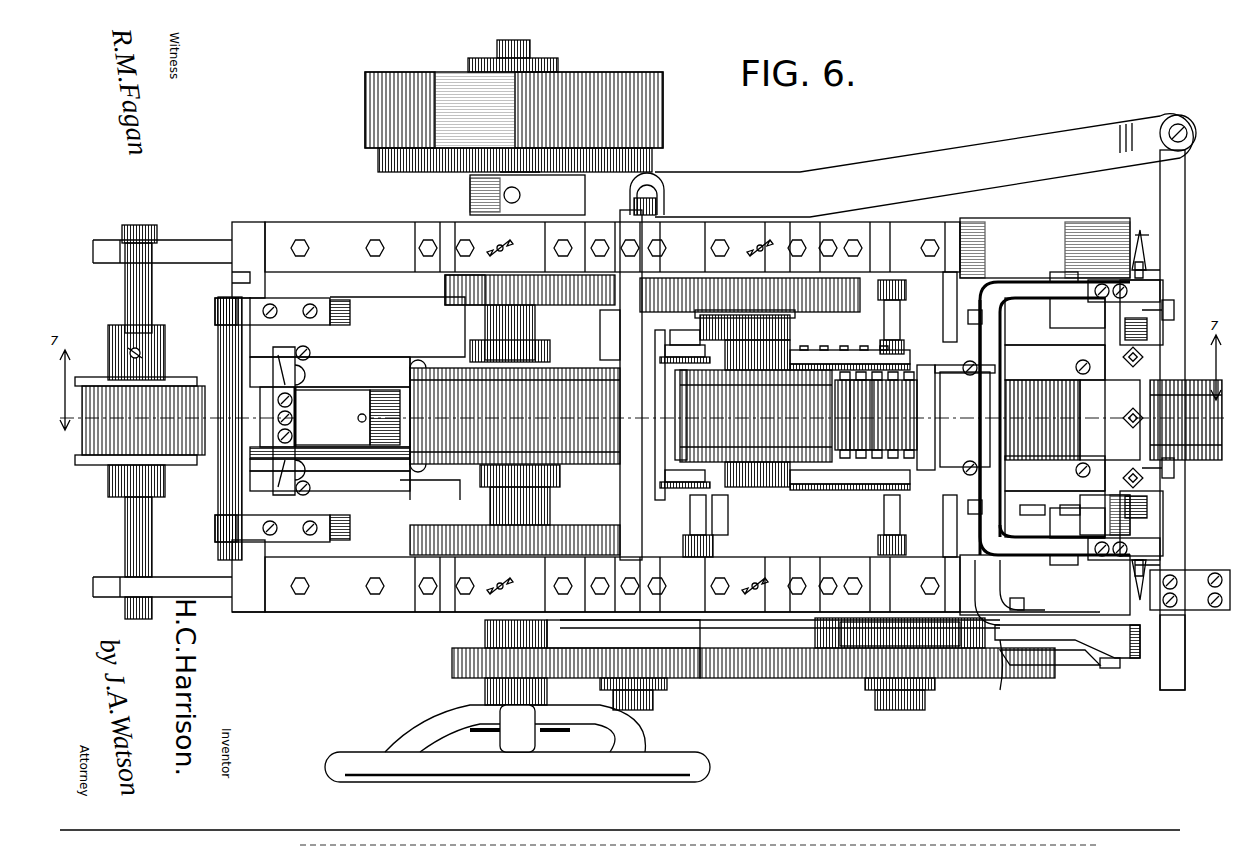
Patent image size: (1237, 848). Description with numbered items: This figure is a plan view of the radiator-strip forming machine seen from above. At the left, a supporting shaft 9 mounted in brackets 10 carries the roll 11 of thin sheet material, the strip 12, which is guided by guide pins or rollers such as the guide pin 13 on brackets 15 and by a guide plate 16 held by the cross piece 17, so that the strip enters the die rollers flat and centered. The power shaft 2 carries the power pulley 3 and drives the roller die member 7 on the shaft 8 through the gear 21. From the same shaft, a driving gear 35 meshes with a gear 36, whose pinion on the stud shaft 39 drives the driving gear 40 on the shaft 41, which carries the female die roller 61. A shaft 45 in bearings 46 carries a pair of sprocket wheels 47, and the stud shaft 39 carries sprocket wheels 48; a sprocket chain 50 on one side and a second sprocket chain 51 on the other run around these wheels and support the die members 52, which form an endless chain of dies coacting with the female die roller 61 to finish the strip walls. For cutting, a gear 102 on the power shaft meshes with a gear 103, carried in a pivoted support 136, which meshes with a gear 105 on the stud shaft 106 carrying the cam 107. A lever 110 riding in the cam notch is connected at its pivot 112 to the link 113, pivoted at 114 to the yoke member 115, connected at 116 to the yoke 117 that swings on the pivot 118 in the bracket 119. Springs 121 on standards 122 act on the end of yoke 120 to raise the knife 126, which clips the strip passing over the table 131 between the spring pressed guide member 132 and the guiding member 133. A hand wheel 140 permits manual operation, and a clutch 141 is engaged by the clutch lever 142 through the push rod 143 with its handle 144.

The power shaft 2 is at (495, 52).
The power pulley 3 is at (422, 85).
The roller die member 7 is at (570, 395).
The shaft 8 is at (515, 340).
The supporting shaft 9 is at (150, 318).
The brackets 10 is at (185, 242).
The roll 11 is at (105, 445).
The strip 12 is at (218, 445).
The guide pin 13 is at (218, 345).
The brackets 15 is at (290, 310).
The guide plate 16 is at (340, 403).
The cross piece 17 is at (275, 368).
The gear 21 is at (560, 540).
The driving gear 35 is at (575, 290).
The gear 36 is at (618, 300).
The stud shaft 39 is at (690, 520).
The driving gear 40 is at (740, 290).
The shaft 41 is at (755, 335).
The shaft 45 is at (900, 320).
The bearings 46 is at (900, 510).
The sprocket wheels 47 is at (862, 350).
The sprocket wheels 48 is at (695, 345).
The sprocket chain 50 is at (825, 350).
The sprocket chain 51 is at (830, 478).
The die members 52 is at (900, 350).
The female die roller 61 is at (722, 500).
The gear 102 is at (490, 662).
The gear 103 is at (680, 662).
The gear 105 is at (945, 685).
The stud shaft 106 is at (900, 695).
The cam 107 is at (855, 652).
The lever 110 is at (985, 652).
The pivot 112 is at (1112, 672).
The link 113 is at (1072, 655).
The pivot 114 is at (1005, 665).
The yoke member 115 is at (1020, 610).
The connection 116 is at (975, 310).
The yoke 117 is at (1030, 290).
The pivot 118 is at (1066, 272).
The bracket 119 is at (1125, 515).
The end of yoke 120 is at (1160, 290).
The springs 121 is at (1150, 262).
The standards 122 is at (1138, 230).
The knife 126 is at (1170, 320).
The table 131 is at (1018, 340).
The spring pressed guide member 132 is at (930, 420).
The guiding member 133 is at (1100, 395).
The pivoted support 136 is at (712, 632).
The hand wheel 140 is at (368, 760).
The clutch 141 is at (468, 163).
The clutch lever 142 is at (905, 165).
The push rod 143 is at (1165, 178).
The handle 144 is at (1170, 690).